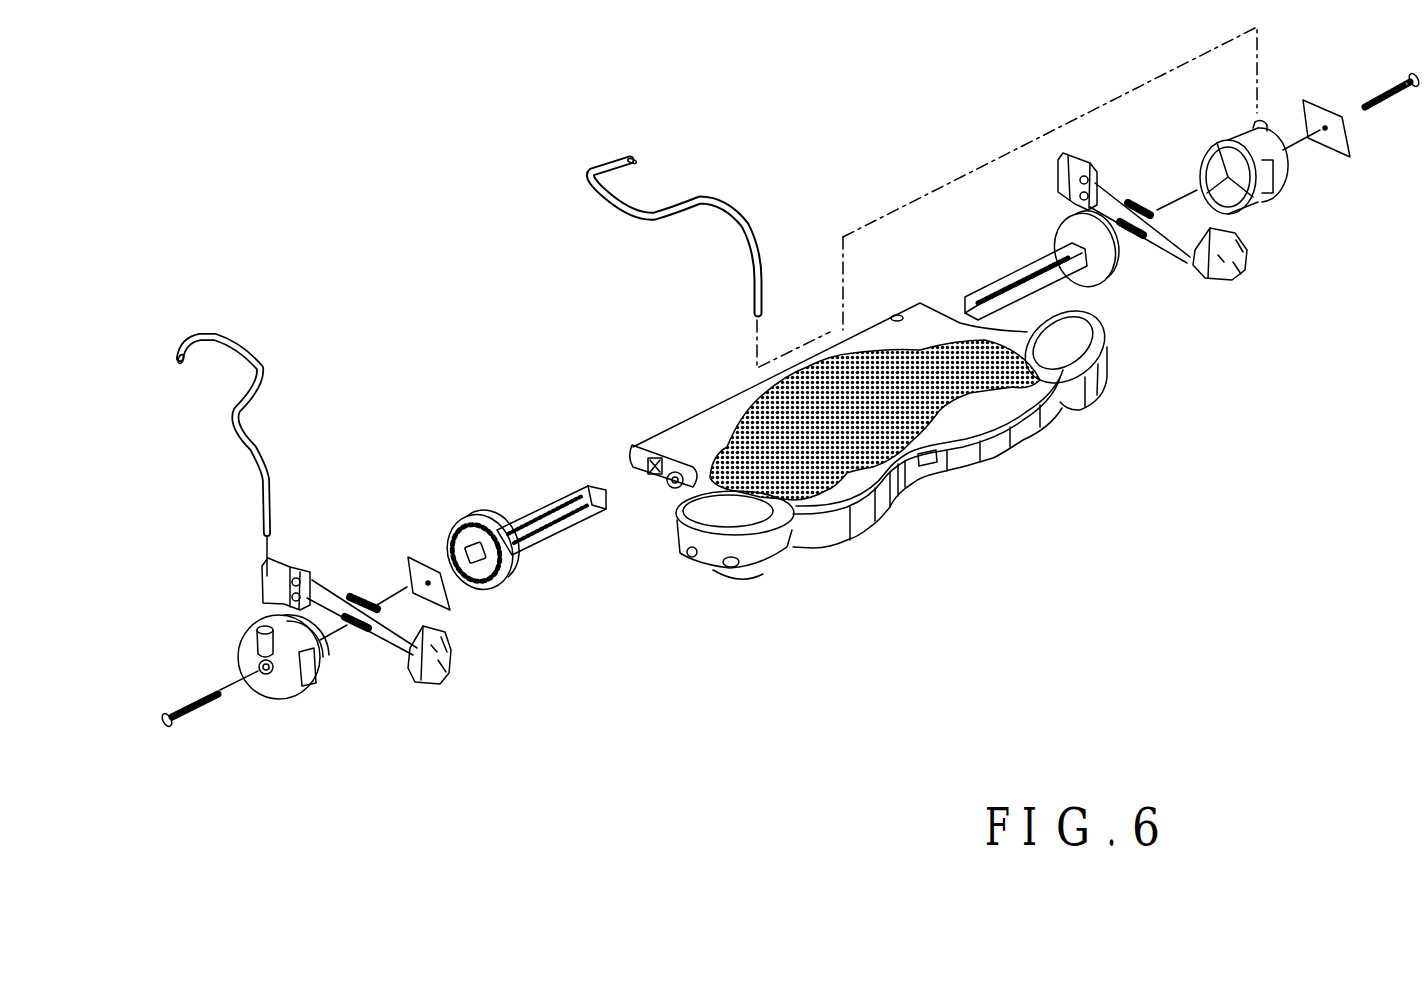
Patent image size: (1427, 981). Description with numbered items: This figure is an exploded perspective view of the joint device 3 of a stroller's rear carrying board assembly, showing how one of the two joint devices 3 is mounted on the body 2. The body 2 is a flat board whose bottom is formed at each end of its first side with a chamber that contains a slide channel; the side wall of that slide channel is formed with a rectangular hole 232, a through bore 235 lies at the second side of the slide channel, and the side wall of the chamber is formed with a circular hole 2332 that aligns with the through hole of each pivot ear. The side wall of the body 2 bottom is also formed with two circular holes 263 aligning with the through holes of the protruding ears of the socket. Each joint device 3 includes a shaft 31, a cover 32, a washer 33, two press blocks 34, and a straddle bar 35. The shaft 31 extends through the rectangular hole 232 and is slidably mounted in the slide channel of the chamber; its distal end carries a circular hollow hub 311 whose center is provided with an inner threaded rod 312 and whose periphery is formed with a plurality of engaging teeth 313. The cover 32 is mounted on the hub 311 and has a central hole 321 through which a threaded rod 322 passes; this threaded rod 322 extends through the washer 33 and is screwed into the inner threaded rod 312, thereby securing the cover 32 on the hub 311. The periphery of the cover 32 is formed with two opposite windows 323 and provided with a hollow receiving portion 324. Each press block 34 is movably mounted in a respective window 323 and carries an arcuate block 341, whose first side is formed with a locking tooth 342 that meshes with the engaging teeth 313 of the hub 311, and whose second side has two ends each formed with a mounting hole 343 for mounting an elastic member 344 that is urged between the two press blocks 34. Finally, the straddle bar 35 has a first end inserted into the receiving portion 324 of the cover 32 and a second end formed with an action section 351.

The body 2 is at (937, 507).
The rectangular hole 232 is at (650, 450).
The circular hole 2332 is at (677, 493).
The through bore 235 is at (893, 318).
The circular hole 263 is at (733, 567).
The joint device 3 is at (626, 684).
The shaft 31 is at (543, 493).
The circular hollow hub 311 is at (478, 523).
The inner threaded rod 312 is at (490, 560).
The engaging teeth 313 is at (477, 587).
The cover 32 is at (287, 712).
The central hole 321 is at (262, 668).
The threaded rod 322 is at (183, 712).
The window 323 is at (307, 682).
The hollow receiving portion 324 is at (258, 632).
The washer 33 is at (418, 560).
The press block 34 is at (428, 690).
The arcuate block 341 is at (1197, 268).
The locking tooth 342 is at (1213, 268).
The mounting hole 343 is at (306, 570).
The elastic member 344 is at (352, 632).
The straddle bar 35 is at (267, 427).
The action section 351 is at (190, 344).